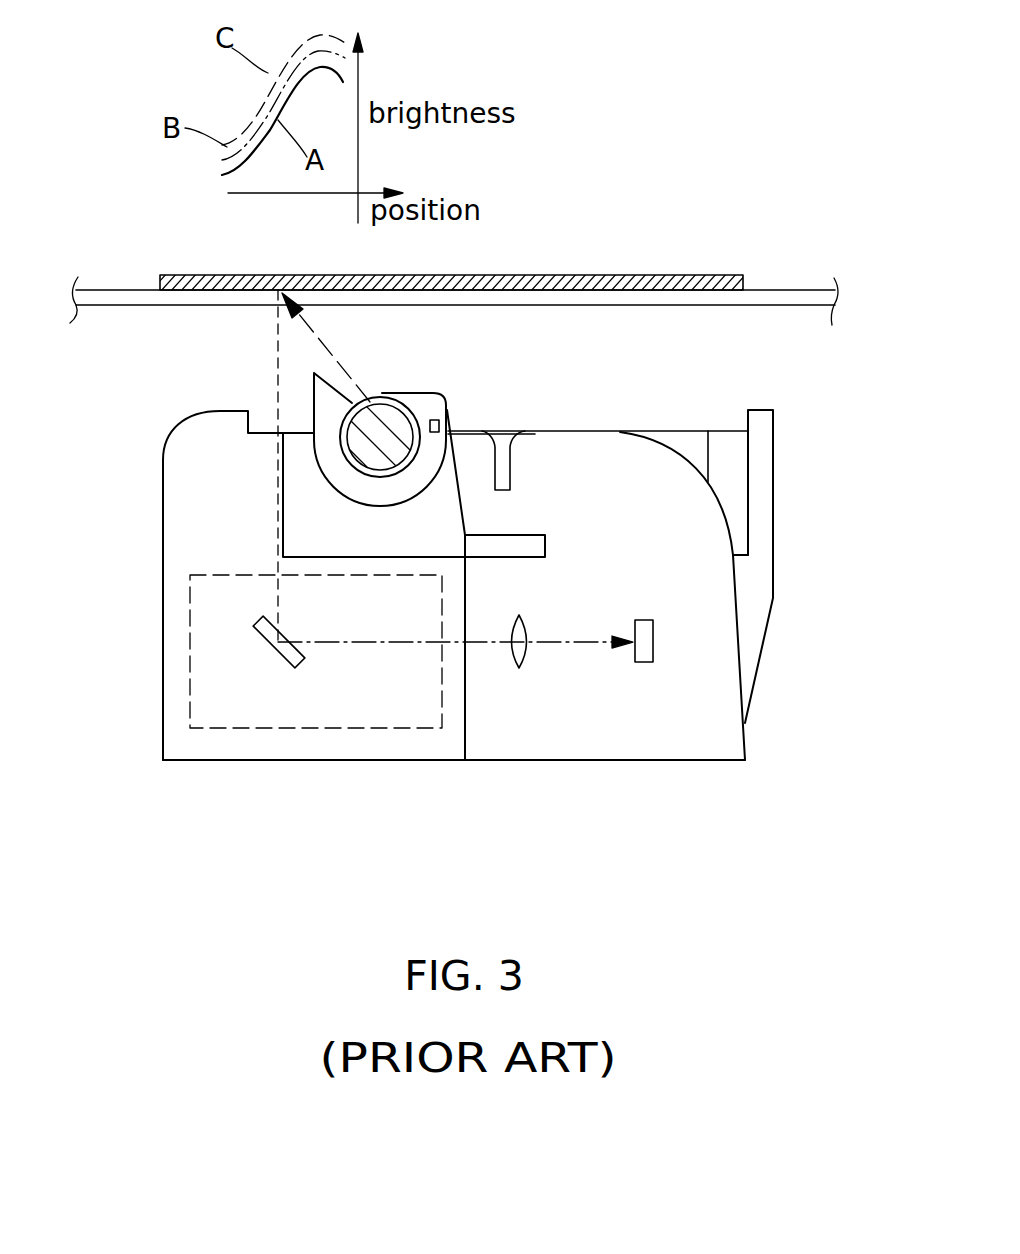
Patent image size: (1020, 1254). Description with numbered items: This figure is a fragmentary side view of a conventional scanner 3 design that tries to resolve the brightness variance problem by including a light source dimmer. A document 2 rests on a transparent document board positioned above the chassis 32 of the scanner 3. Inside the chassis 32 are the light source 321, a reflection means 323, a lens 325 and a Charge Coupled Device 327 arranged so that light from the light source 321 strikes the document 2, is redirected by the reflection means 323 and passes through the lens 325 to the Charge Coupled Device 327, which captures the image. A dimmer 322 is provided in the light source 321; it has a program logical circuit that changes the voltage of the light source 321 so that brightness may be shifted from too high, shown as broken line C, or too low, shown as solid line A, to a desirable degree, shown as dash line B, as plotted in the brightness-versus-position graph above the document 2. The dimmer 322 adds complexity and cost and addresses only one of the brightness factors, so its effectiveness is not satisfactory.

The document 2 is at (610, 277).
The scanner 3 is at (474, 570).
The chassis 32 is at (272, 752).
The light source 321 is at (420, 405).
The dimmer 322 is at (440, 424).
The reflection means 323 is at (203, 672).
The lens 325 is at (520, 652).
The Charge Coupled Device (CCD) 327 is at (655, 642).